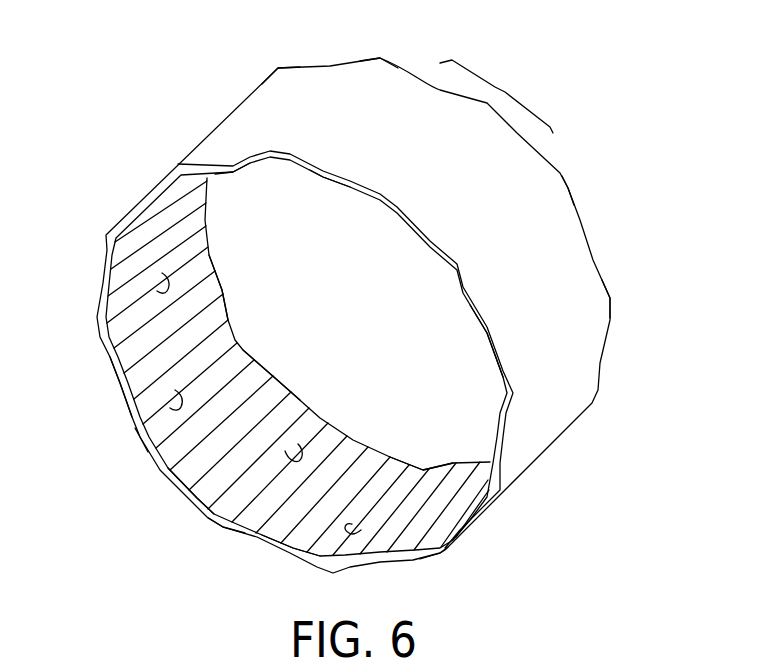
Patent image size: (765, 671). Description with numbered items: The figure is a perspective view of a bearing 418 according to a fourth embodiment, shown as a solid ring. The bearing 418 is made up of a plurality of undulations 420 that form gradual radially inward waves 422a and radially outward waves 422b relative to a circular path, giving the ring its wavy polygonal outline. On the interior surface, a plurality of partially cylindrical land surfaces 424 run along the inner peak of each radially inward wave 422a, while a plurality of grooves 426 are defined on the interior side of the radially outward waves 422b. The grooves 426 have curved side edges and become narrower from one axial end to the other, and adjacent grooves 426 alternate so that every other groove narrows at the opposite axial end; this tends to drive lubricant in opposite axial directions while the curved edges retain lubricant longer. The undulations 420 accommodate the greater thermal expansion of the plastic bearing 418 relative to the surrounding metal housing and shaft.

The bearing 418 is at (585, 137).
The undulations 420 is at (496, 96).
The radially inward waves 422a is at (332, 187).
The radially outward waves 422b is at (278, 68).
The partially cylindrical land surfaces 424 is at (122, 382).
The grooves 426 is at (157, 291).